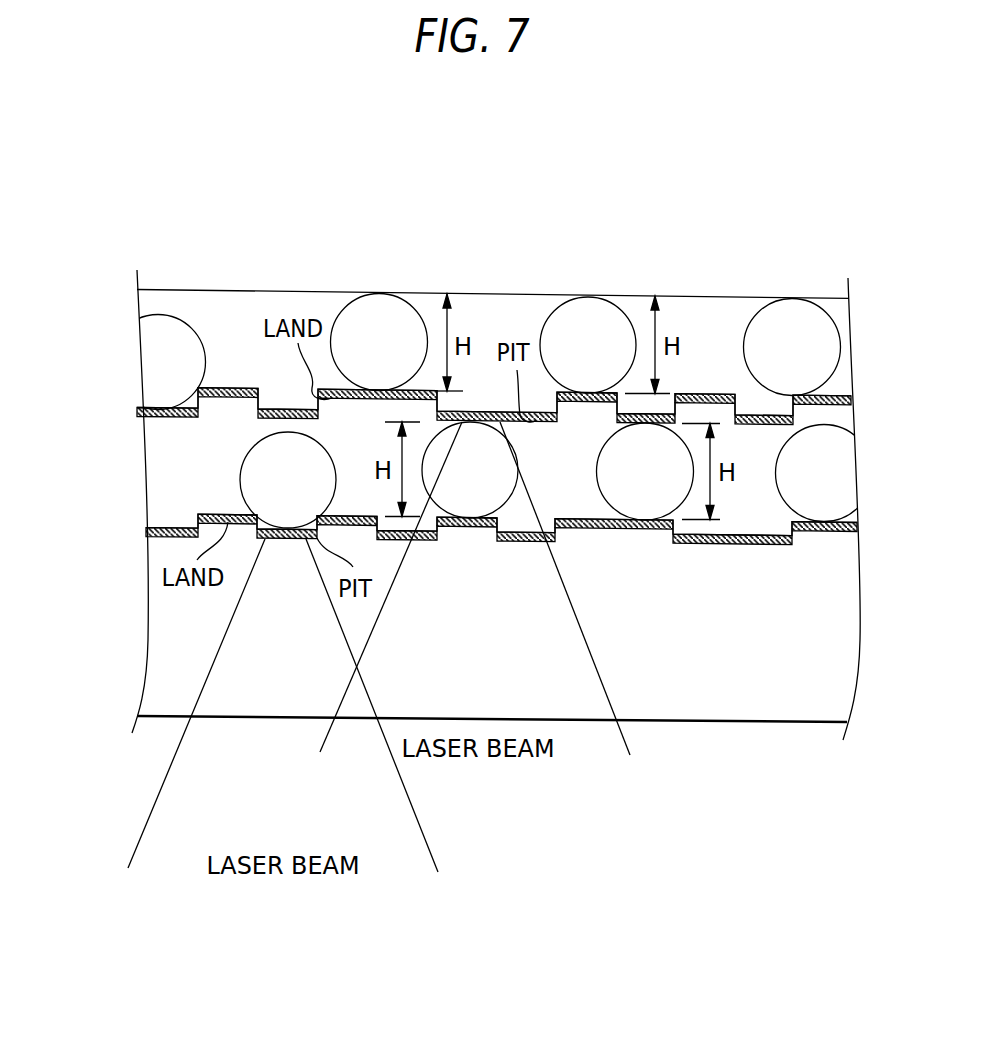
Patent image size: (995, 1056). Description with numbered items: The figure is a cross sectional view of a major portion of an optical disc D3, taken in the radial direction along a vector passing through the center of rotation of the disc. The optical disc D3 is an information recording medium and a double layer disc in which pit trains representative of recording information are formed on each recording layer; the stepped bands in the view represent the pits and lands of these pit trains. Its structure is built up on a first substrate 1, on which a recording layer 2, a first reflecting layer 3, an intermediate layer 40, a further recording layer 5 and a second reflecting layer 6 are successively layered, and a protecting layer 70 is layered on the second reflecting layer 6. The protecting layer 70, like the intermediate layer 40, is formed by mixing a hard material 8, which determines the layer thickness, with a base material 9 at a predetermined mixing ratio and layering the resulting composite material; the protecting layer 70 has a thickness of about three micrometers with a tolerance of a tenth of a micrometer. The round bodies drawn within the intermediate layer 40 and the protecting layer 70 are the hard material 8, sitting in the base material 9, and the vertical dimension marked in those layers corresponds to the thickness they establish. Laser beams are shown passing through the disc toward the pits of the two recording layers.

The optical disc D3 is at (247, 181).
The first substrate 1 is at (842, 662).
The recording layer 2 is at (840, 530).
The first reflecting layer 3 is at (841, 519).
The recording layer 5 is at (838, 403).
The second reflecting layer 6 is at (834, 394).
The hard material 8 is at (148, 327).
The base material 9 is at (206, 313).
The intermediate layer 40 is at (463, 522).
The protecting layer 70 is at (452, 391).